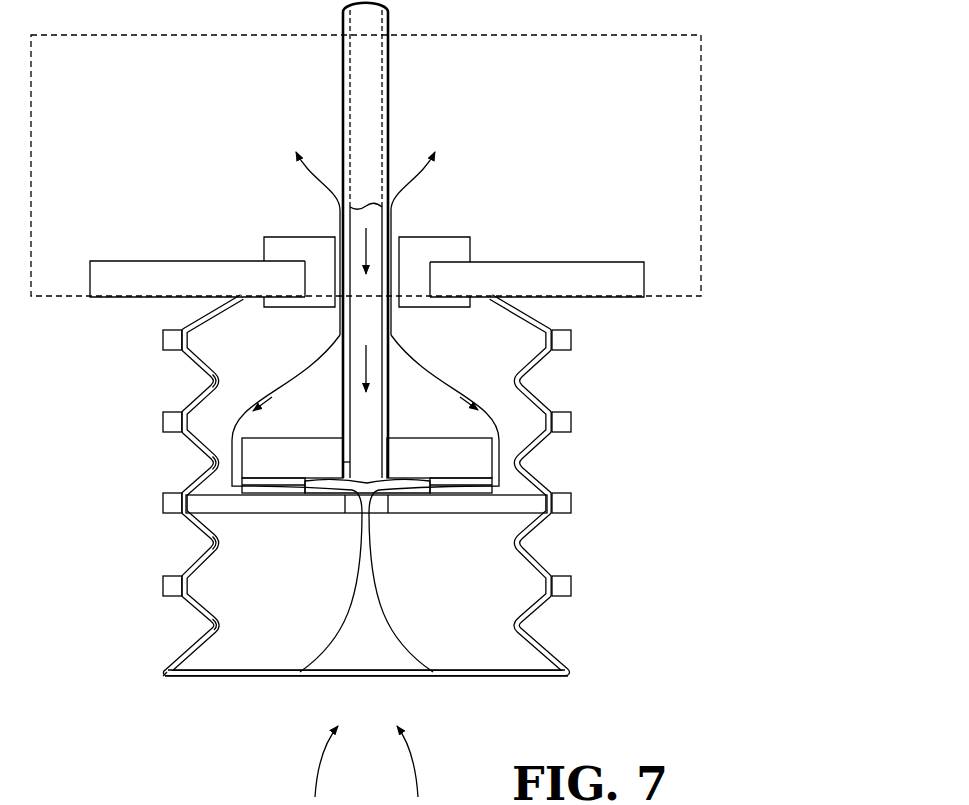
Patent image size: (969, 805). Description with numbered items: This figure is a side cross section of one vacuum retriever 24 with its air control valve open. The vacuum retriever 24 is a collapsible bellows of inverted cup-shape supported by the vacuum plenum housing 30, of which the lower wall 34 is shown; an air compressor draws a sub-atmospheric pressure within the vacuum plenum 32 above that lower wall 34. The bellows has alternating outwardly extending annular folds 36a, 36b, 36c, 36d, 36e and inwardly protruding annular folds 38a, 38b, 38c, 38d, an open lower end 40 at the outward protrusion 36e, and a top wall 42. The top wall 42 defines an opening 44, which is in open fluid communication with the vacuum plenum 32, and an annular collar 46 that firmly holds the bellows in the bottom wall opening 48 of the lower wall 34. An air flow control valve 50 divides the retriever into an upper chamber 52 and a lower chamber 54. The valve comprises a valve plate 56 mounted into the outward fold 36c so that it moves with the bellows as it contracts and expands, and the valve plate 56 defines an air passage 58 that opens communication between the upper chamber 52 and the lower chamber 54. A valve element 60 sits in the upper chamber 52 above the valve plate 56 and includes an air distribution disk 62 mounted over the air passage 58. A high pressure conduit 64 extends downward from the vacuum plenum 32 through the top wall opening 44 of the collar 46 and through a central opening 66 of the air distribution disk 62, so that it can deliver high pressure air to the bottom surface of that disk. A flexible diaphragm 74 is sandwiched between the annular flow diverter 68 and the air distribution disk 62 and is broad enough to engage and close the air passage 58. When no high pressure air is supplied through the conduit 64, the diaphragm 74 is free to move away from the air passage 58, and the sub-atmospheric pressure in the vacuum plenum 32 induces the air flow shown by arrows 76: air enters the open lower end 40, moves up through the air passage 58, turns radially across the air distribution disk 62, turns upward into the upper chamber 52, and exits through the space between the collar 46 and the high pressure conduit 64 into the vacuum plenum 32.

The vacuum retriever 24 is at (602, 385).
The vacuum plenum housing 30 is at (704, 185).
The vacuum plenum 32 is at (558, 124).
The lower wall 34 is at (611, 262).
The outwardly extending annular fold 36a is at (163, 336).
The outwardly extending annular fold 36b is at (163, 418).
The outwardly extending annular fold 36c is at (163, 500).
The outwardly extending annular fold 36d is at (163, 584).
The outwardly extending annular fold 36e is at (164, 668).
The inwardly protruding annular fold 38a is at (218, 381).
The inwardly protruding annular fold 38b is at (218, 463).
The inwardly protruding annular fold 38c is at (218, 543).
The inwardly protruding annular fold 38d is at (218, 625).
The open lower end 40 is at (228, 676).
The top wall 42 is at (264, 300).
The top wall opening 44 is at (386, 240).
The annular collar 46 is at (280, 237).
The bottom wall opening 48 is at (428, 277).
The air flow control valve 50 is at (469, 517).
The upper chamber 52 is at (451, 337).
The lower chamber 54 is at (456, 630).
The valve plate 56 is at (250, 499).
The air passage 58 is at (356, 512).
The valve element 60 is at (302, 436).
The air distribution disk 62 is at (478, 436).
The high pressure conduit 64 is at (384, 74).
The central opening 66 is at (343, 461).
The annular flow diverter 68 is at (432, 500).
The diaphragm 74 is at (404, 478).
The arrows 76 is at (307, 160).